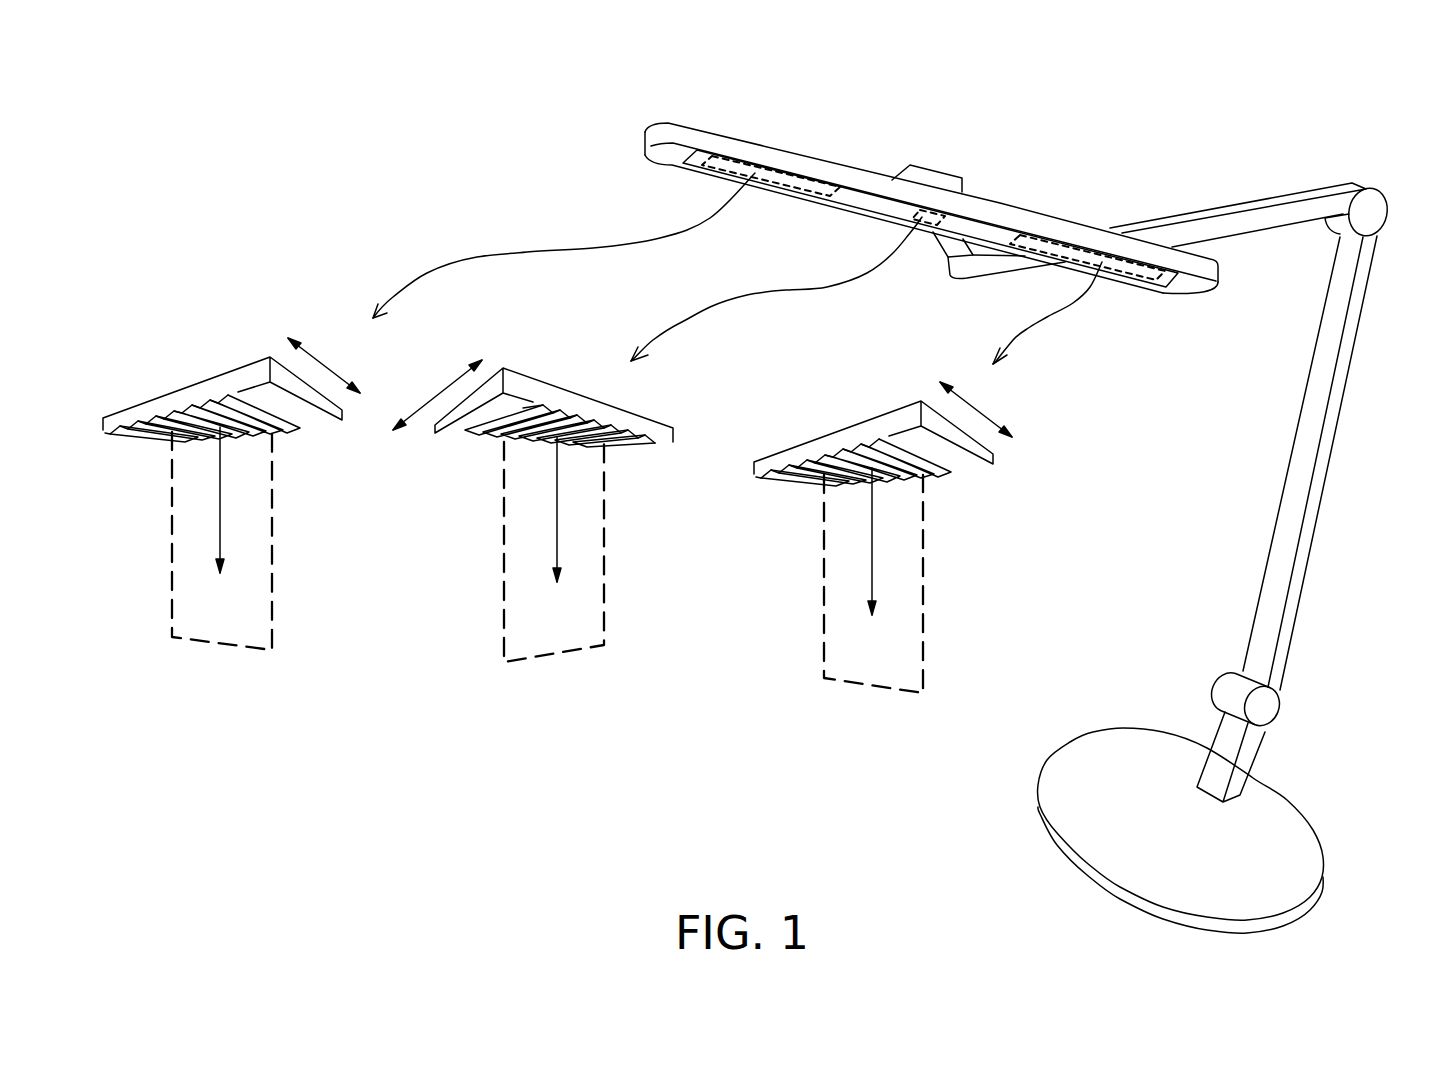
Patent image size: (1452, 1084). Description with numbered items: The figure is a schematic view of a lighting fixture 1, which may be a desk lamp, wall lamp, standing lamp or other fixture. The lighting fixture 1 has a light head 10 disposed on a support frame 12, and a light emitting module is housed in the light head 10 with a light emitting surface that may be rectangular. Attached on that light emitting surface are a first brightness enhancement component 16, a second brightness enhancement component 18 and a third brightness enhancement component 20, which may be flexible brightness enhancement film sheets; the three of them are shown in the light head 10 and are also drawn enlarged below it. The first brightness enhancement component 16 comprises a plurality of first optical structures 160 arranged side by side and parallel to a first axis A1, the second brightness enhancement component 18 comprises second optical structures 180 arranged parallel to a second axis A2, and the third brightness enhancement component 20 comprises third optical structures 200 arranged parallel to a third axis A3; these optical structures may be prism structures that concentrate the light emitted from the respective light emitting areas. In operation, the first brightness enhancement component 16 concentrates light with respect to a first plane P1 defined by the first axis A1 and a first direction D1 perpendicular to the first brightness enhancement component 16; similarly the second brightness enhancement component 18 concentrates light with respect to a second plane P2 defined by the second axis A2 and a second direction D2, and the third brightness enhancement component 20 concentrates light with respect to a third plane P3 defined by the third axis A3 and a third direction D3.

The lighting fixture 1 is at (1354, 102).
The light head 10 is at (995, 207).
The support frame 12 is at (1323, 413).
The first brightness enhancement component 16 is at (905, 198).
The second brightness enhancement component 18 is at (693, 160).
The third brightness enhancement component 20 is at (1190, 280).
The first optical structures 160 is at (452, 435).
The second optical structures 180 is at (322, 417).
The third optical structures 200 is at (973, 462).
The first axis A1 is at (437, 395).
The second axis A2 is at (324, 363).
The third axis A3 is at (976, 407).
The first direction D1 is at (555, 525).
The second direction D2 is at (220, 500).
The third direction D3 is at (868, 542).
The first plane P1 is at (607, 565).
The second plane P2 is at (275, 567).
The third plane P3 is at (927, 612).